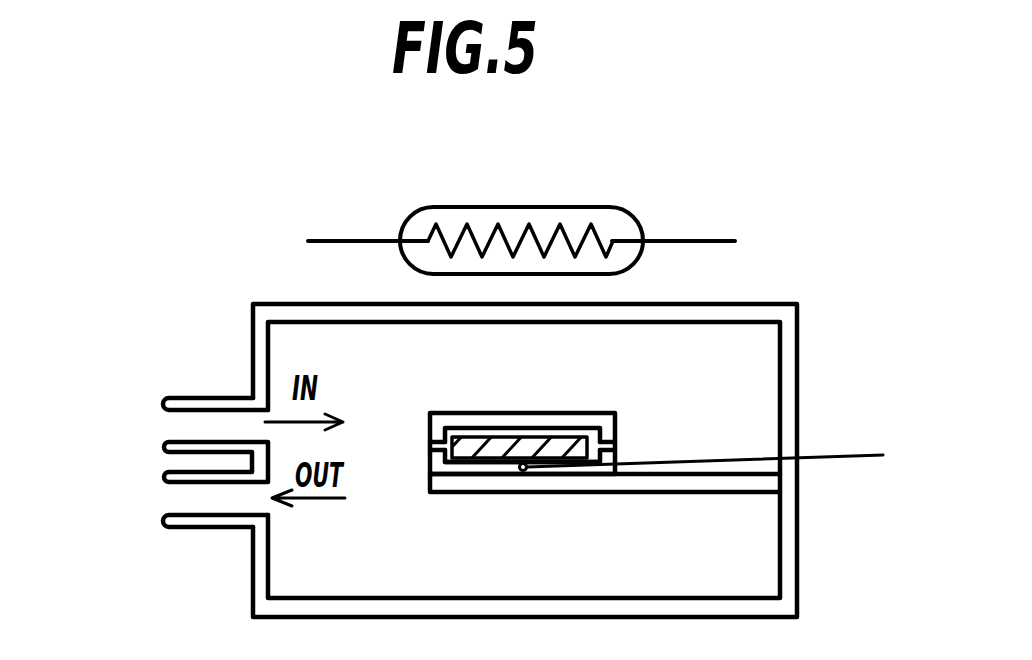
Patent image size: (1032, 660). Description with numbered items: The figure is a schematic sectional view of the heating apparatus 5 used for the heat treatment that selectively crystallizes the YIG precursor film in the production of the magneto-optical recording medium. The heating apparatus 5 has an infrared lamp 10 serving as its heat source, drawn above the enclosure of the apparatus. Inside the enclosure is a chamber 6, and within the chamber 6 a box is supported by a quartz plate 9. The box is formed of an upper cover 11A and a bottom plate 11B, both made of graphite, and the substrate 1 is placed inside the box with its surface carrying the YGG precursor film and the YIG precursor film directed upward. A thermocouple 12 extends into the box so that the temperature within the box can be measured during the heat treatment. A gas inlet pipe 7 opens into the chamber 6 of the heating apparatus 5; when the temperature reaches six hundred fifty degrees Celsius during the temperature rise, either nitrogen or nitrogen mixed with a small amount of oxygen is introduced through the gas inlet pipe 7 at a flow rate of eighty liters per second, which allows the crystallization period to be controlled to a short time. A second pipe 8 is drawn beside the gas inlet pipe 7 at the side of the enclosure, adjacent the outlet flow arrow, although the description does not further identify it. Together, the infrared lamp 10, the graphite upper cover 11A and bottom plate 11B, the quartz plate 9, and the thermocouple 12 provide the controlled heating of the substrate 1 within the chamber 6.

The substrate 1 is at (497, 455).
The heating apparatus 5 is at (772, 305).
The chamber 6 is at (573, 460).
The gas inlet pipe 7 is at (185, 422).
The outlet pipe 8 is at (185, 500).
The quartz plate 9 is at (647, 482).
The infrared lamp 10 is at (625, 218).
The upper cover 11A is at (605, 420).
The bottom plate 11B is at (563, 470).
The thermocouple 12 is at (838, 455).